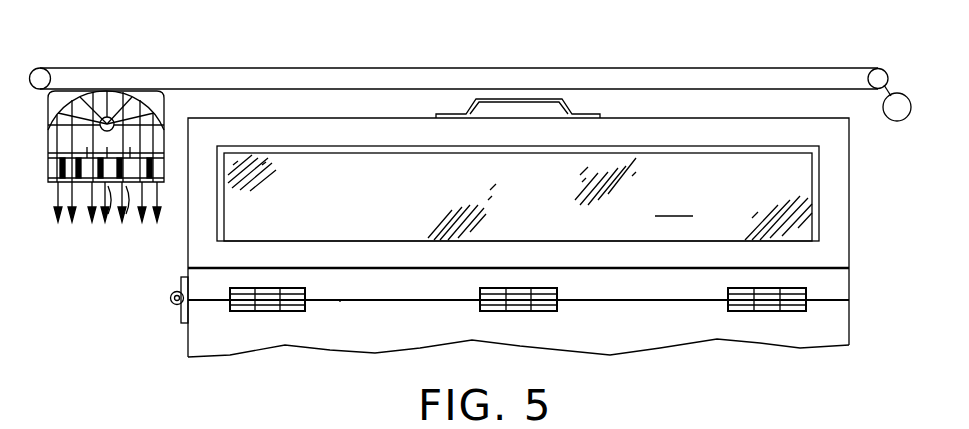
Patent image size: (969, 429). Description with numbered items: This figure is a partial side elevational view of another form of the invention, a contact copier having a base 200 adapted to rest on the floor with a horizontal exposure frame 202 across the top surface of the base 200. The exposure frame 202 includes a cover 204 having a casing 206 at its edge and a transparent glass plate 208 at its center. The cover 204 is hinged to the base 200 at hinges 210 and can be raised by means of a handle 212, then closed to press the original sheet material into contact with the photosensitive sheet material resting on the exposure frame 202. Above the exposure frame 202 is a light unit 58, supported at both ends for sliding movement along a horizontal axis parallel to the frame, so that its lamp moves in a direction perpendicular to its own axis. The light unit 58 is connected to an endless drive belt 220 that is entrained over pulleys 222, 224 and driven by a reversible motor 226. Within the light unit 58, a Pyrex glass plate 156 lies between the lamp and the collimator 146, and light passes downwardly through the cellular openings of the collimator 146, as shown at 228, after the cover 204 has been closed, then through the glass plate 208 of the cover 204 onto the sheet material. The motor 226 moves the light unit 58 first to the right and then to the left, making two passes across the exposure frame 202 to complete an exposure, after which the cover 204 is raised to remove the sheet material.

The light unit 58 is at (45, 107).
The collimator 146 is at (53, 180).
The glass plate 156 is at (52, 157).
The base 200 is at (200, 336).
The exposure frame 202 is at (340, 302).
The cover 204 is at (852, 208).
The casing 206 is at (840, 177).
The glass plate 208 is at (518, 193).
The hinge 210 is at (730, 311).
The handle 212 is at (492, 98).
The endless drive belt 220 is at (105, 66).
The pulley 222 is at (33, 68).
The pulley 224 is at (882, 69).
The reversible motor 226 is at (905, 121).
The light path 228 is at (127, 200).